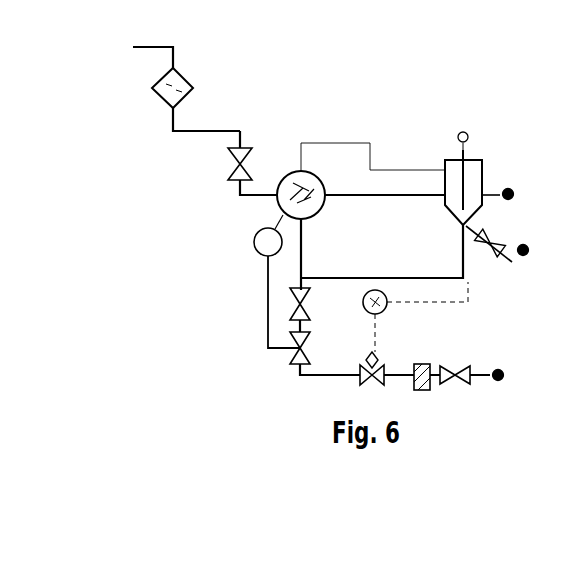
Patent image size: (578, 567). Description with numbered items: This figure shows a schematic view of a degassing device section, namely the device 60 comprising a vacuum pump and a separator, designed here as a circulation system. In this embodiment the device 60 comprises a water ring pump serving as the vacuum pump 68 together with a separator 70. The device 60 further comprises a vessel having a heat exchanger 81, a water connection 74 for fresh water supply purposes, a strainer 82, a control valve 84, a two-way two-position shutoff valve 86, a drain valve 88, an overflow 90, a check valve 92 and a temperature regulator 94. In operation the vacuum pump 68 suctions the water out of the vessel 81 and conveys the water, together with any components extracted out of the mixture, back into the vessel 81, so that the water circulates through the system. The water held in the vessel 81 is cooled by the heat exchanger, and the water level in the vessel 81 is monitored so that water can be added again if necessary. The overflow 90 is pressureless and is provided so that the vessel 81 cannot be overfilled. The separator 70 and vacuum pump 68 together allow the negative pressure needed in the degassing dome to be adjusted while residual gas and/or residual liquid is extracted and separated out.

The device 60 is at (204, 335).
The vacuum pump 68 is at (282, 213).
The separator 70 is at (192, 70).
The water connection 74 is at (482, 384).
The vessel having a heat exchanger 81 is at (477, 172).
The strainer 82 is at (423, 390).
The control valve 84 is at (368, 394).
The 2/2 shutoff valve 86 is at (290, 350).
The drain valve 88 is at (510, 262).
The overflow 90 is at (494, 204).
The check valve 92 is at (232, 178).
The temperature regulator 94 is at (385, 311).